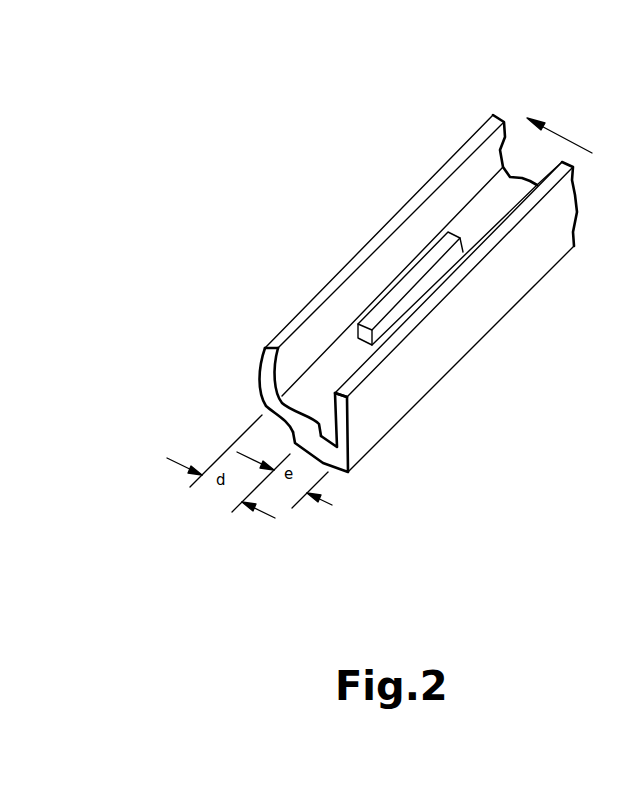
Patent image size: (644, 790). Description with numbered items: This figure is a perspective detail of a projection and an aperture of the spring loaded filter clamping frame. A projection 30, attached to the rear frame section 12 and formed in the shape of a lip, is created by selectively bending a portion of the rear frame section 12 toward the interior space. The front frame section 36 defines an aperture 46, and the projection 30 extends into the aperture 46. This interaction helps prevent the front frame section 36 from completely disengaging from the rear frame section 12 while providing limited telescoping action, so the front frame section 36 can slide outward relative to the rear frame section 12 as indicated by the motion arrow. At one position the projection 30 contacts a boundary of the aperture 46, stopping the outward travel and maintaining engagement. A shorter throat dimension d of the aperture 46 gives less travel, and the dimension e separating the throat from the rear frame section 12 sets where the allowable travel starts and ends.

The rear frame section 12 is at (503, 281).
The projection 30 is at (373, 320).
The front frame section 36 is at (436, 180).
The aperture 46 is at (390, 280).